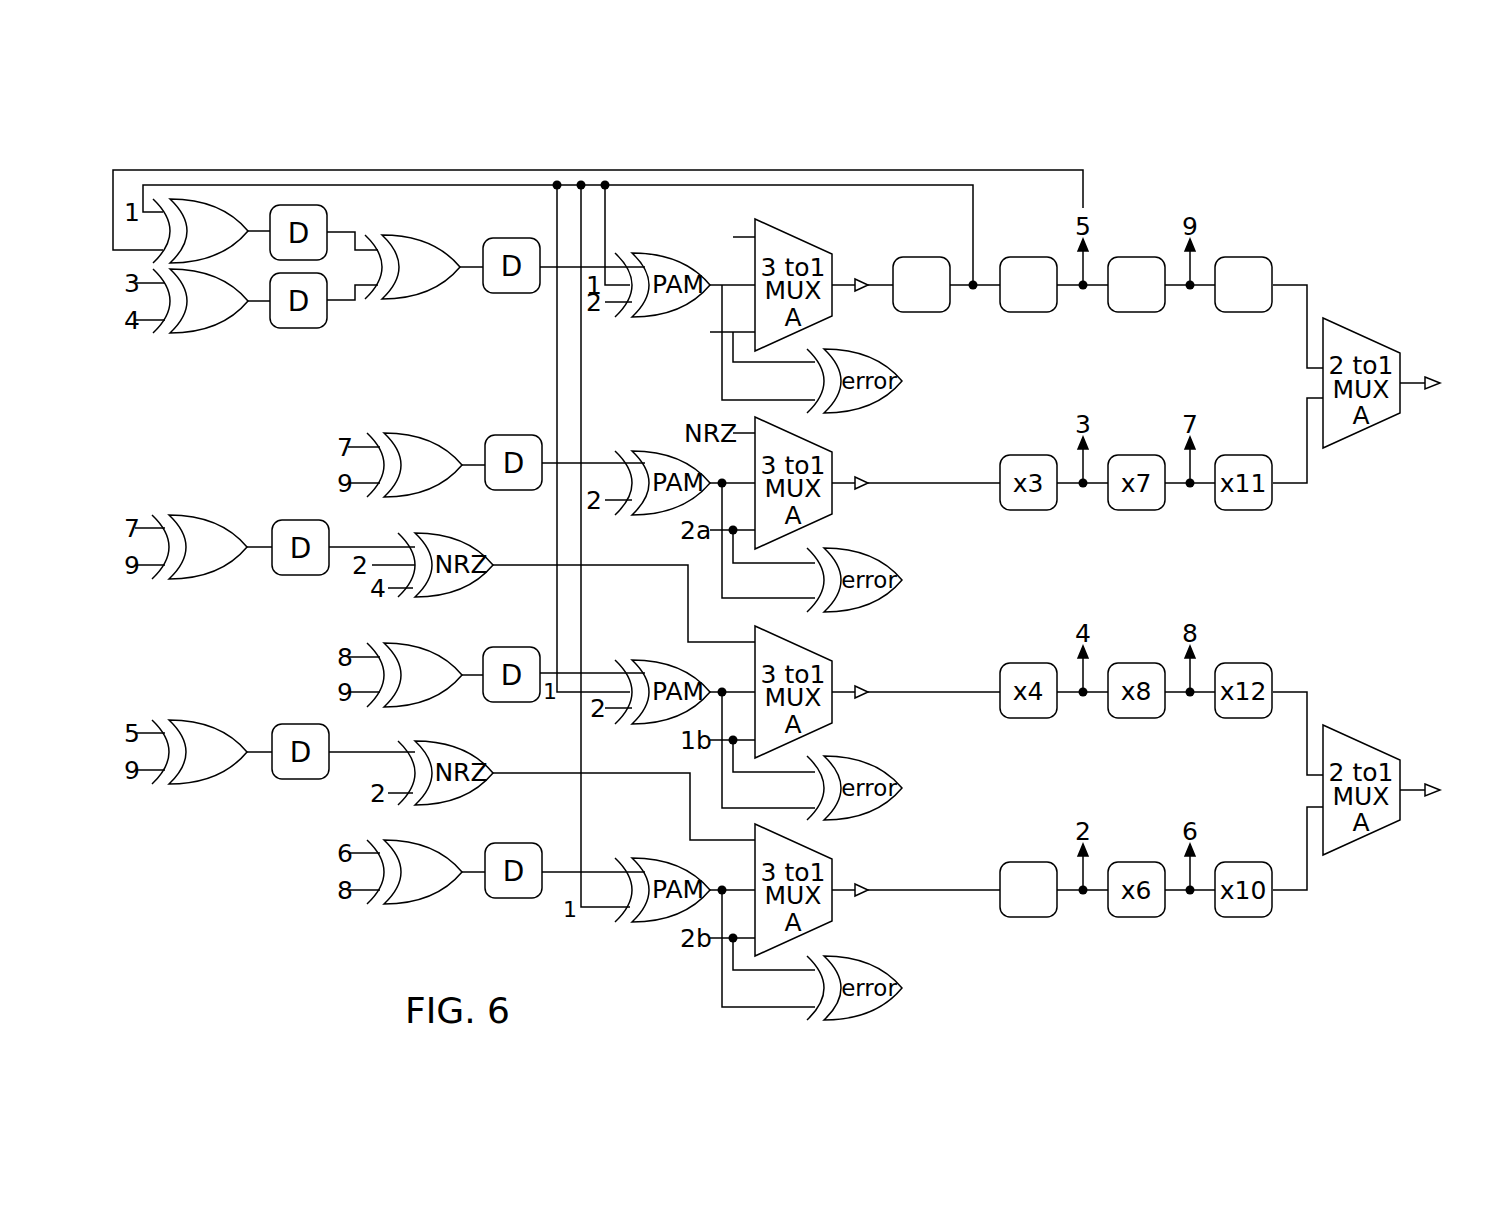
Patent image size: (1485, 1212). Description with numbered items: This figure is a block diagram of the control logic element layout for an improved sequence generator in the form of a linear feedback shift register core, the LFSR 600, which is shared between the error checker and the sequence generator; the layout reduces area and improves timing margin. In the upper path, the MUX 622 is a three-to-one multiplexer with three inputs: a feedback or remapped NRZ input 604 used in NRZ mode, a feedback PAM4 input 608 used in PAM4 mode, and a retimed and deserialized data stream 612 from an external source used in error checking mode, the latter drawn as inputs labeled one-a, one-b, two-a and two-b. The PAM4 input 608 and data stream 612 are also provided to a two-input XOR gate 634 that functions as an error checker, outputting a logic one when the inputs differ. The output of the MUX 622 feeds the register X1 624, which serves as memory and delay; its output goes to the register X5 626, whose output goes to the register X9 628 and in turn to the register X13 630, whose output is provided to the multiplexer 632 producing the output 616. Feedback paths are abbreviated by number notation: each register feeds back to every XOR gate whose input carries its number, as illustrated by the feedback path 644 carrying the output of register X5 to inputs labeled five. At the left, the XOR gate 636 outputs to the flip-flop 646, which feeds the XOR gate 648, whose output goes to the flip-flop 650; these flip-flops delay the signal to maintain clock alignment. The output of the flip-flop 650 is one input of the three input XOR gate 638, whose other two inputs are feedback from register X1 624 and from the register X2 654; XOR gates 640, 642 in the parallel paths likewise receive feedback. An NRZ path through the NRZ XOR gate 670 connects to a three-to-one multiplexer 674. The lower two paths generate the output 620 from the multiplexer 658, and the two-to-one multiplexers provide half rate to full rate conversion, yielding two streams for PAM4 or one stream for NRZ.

The LFSR 600 is at (1100, 142).
The NRZ input 604 is at (741, 237).
The PAM4 input 608 is at (713, 282).
The retimed and deserialized data stream 612 is at (713, 338).
The output 616 is at (1432, 375).
The output 620 is at (1432, 782).
The MUX 622 is at (812, 246).
The register X1 624 is at (926, 313).
The register X5 626 is at (1010, 257).
The register X9 628 is at (1120, 257).
The register X13 630 is at (1238, 257).
The multiplexer 632 is at (1340, 448).
The XOR gate 634 is at (900, 391).
The XOR gate 636 is at (213, 210).
The three input XOR gate 638 is at (662, 318).
The XOR gate 640 is at (662, 725).
The XOR gate 642 is at (650, 923).
The feedback path 644 is at (137, 170).
The flip-flop 646 is at (328, 222).
The XOR gate 648 is at (420, 302).
The flip-flop 650 is at (519, 295).
The register X2 654 is at (1020, 918).
The multiplexer 658 is at (1340, 855).
The NRZ XOR gate 670 is at (455, 600).
The 3 to 1 multiplexer 674 is at (815, 654).